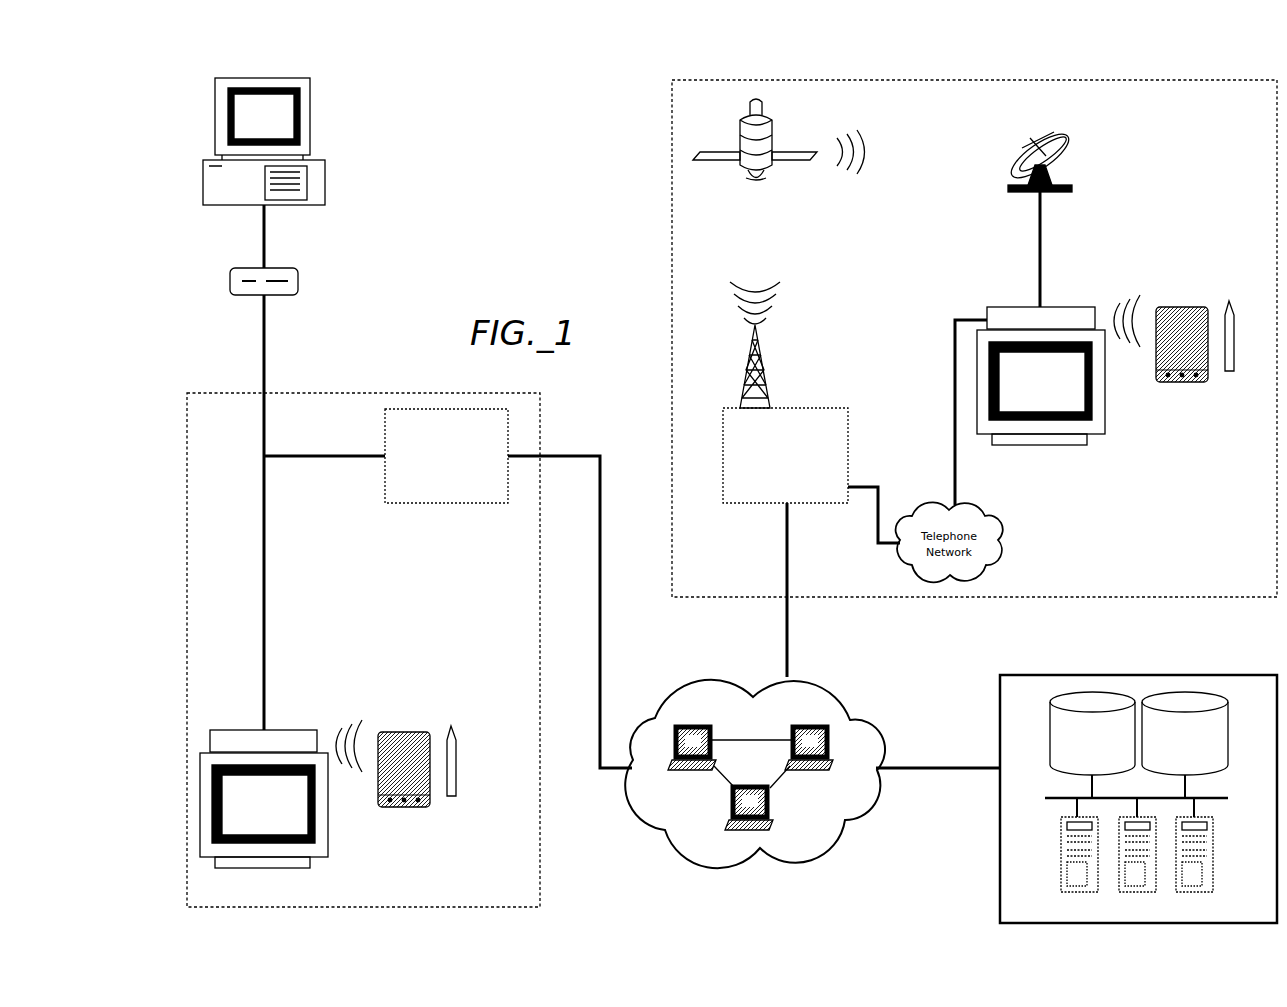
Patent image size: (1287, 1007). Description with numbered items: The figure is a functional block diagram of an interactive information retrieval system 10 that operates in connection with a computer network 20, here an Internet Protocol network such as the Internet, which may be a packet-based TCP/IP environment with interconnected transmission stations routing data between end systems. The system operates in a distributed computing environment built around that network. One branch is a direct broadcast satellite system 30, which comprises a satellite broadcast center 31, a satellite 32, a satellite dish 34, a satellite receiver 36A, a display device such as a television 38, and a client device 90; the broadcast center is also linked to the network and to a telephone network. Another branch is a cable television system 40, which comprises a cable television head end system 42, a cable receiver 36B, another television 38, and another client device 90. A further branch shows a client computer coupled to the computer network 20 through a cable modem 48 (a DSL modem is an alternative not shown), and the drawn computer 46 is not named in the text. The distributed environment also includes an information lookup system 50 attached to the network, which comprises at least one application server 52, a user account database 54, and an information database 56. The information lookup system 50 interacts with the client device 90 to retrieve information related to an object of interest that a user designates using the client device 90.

The interactive information retrieval system 10 is at (560, 170).
The computer network 20 is at (868, 726).
The direct broadcast satellite system 30 is at (672, 412).
The satellite broadcast center 31 is at (850, 433).
The satellite 32 is at (764, 106).
The satellite dish 34 is at (1074, 189).
The satellite receiver 36A is at (1058, 307).
The cable receiver 36B is at (275, 730).
The television 38 is at (330, 852).
The cable television system 40 is at (345, 393).
The cable television head end system 42 is at (440, 503).
The personal computer 46 is at (312, 120).
The cable modem 48 is at (299, 282).
The information lookup system 50 is at (1000, 852).
The application server 52 is at (1214, 853).
The user account database 54 is at (1050, 758).
The information database 56 is at (1228, 758).
The client device 90 is at (405, 807).